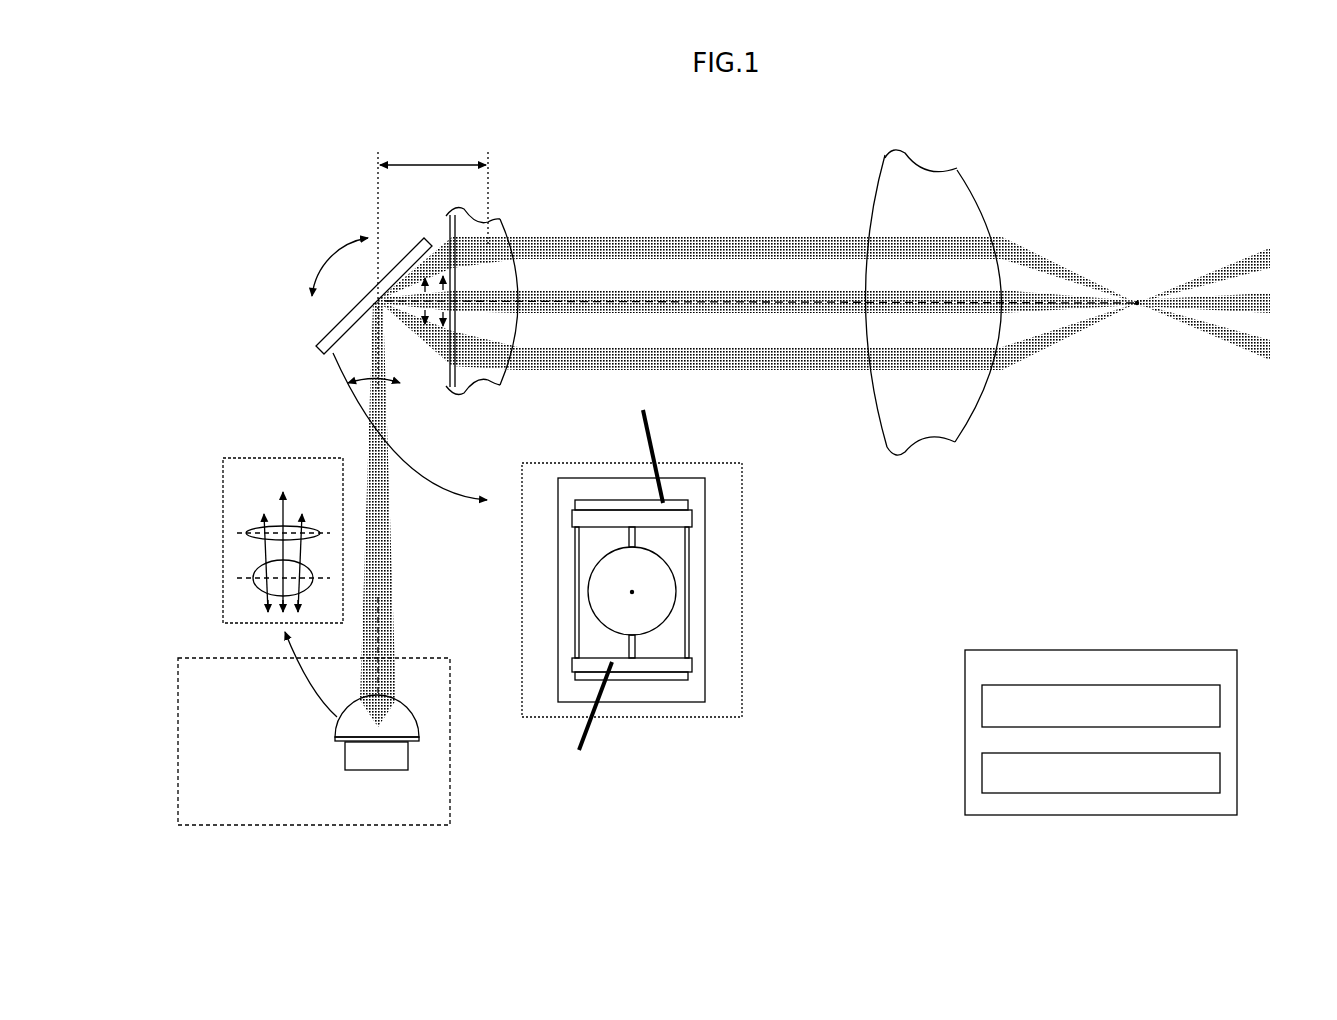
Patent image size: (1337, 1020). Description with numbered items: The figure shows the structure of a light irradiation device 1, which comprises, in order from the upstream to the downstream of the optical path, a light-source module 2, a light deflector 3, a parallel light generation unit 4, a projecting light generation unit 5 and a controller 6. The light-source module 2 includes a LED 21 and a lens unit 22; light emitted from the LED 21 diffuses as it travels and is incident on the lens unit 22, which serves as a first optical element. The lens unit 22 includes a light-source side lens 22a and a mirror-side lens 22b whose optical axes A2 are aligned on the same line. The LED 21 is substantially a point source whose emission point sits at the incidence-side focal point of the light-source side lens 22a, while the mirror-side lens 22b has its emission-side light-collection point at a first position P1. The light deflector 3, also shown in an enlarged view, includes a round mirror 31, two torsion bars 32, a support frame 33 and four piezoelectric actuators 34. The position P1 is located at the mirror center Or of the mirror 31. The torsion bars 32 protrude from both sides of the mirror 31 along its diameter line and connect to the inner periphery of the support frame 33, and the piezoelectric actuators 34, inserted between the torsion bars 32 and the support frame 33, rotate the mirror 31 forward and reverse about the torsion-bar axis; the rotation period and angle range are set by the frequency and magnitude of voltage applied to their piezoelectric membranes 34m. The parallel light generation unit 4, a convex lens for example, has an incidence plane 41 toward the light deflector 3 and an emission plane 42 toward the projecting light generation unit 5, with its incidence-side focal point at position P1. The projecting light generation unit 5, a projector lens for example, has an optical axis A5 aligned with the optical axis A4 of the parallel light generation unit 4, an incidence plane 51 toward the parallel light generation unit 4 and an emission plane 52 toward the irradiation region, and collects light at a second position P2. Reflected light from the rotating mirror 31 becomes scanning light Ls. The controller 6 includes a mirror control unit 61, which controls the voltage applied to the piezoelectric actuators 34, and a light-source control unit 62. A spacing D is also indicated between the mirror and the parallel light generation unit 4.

The light irradiation device 1 is at (667, 146).
The light-source module 2 is at (432, 655).
The LED 21 is at (345, 756).
The lens unit 22 is at (410, 712).
The light-source side lens 22a is at (255, 578).
The mirror-side lens 22b is at (248, 533).
The light deflector 3 is at (524, 480).
The mirror 31 is at (313, 340).
The torsion bars 32 is at (625, 540).
The support frame 33 is at (558, 583).
The piezoelectric actuators 34 is at (628, 527).
The piezoelectric membranes 34m is at (601, 581).
The parallel light generation unit 4 is at (496, 299).
The incidence plane 41 is at (450, 384).
The emission plane 42 is at (520, 268).
The projecting light generation unit 5 is at (934, 302).
The incidence plane 51 is at (873, 205).
The emission plane 52 is at (986, 226).
The controller 6 is at (1173, 645).
The mirror control unit 61 is at (1180, 686).
The light-source control unit 62 is at (1180, 754).
The optical axes A2 is at (381, 627).
The optical axis A4 is at (517, 333).
The optical axis A5 is at (980, 310).
The scanning light Ls is at (466, 262).
The position P1 is at (379, 303).
The mirror center Or is at (634, 593).
The position P2 is at (1137, 306).
The distance between mirror and lens D is at (433, 266).